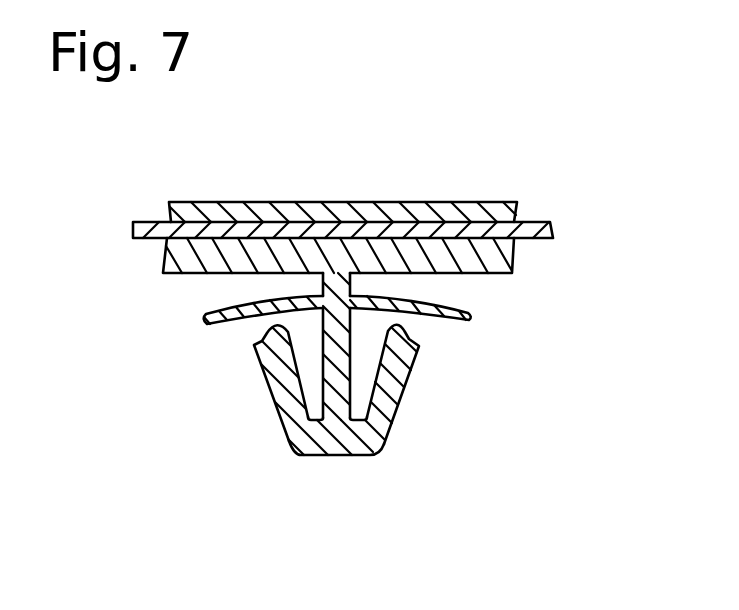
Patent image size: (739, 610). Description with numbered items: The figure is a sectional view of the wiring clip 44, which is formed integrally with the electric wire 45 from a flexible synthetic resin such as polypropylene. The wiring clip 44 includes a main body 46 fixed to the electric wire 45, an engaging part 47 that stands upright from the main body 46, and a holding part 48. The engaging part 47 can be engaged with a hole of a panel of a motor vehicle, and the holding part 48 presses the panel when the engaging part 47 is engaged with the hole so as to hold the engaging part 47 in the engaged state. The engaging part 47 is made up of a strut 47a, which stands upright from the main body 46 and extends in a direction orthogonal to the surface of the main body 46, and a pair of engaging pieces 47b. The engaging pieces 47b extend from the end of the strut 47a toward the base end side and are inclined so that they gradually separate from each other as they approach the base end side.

The wiring clip 44 is at (439, 131).
The electric wire 45 is at (537, 222).
The main body 46 is at (307, 202).
The engaging part 47 is at (368, 456).
The strut 47a is at (344, 392).
The engaging pieces 47b is at (273, 392).
The holding part 48 is at (469, 316).